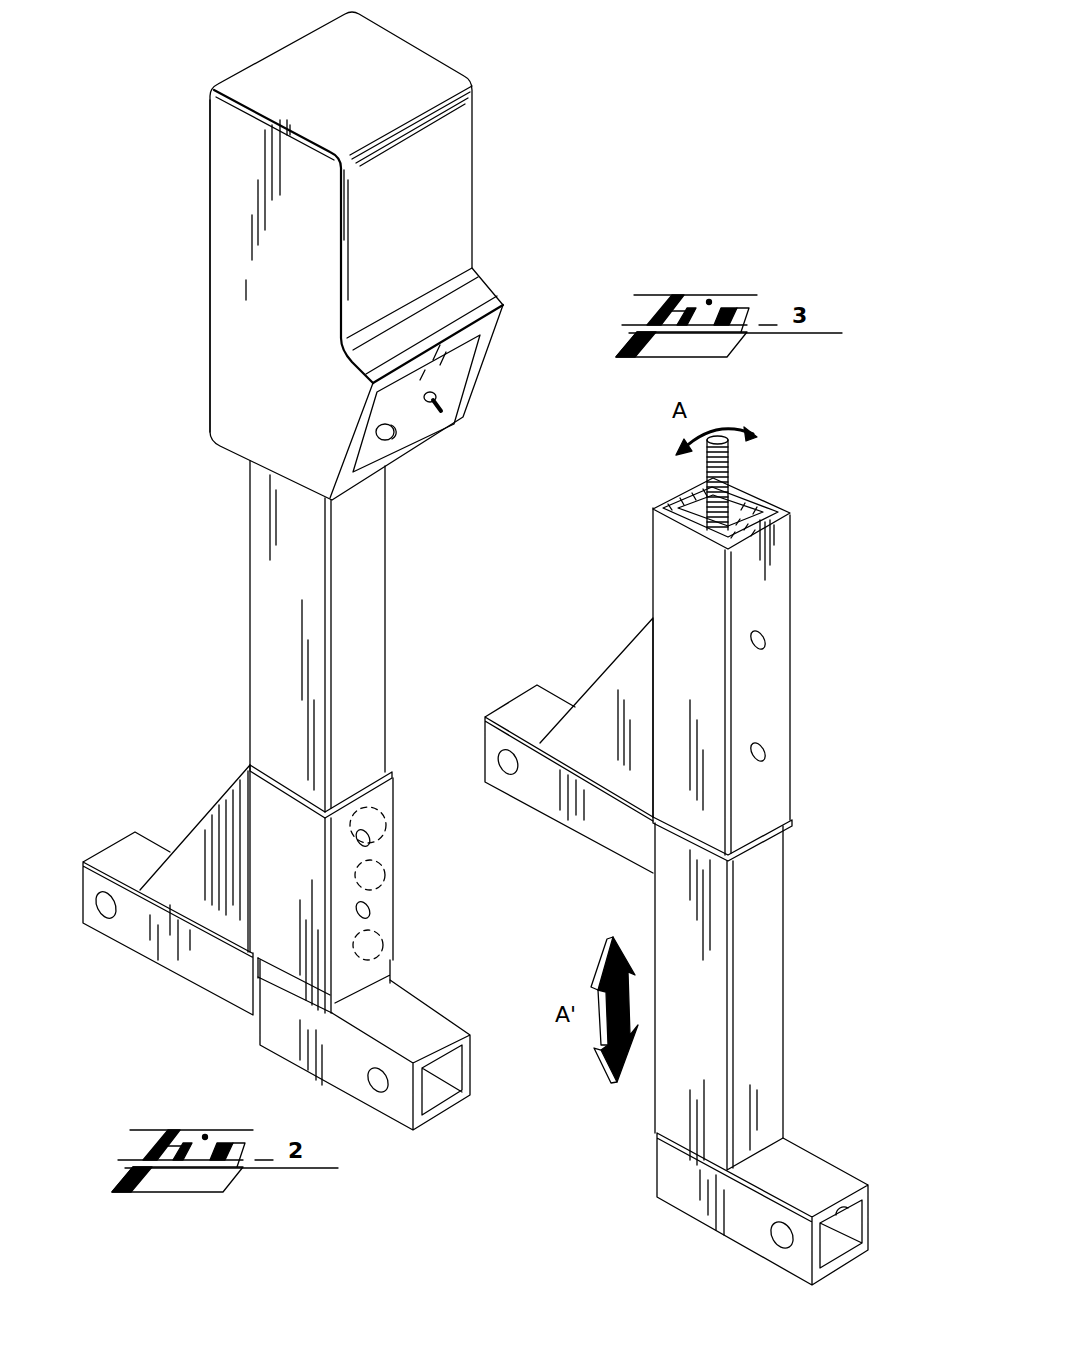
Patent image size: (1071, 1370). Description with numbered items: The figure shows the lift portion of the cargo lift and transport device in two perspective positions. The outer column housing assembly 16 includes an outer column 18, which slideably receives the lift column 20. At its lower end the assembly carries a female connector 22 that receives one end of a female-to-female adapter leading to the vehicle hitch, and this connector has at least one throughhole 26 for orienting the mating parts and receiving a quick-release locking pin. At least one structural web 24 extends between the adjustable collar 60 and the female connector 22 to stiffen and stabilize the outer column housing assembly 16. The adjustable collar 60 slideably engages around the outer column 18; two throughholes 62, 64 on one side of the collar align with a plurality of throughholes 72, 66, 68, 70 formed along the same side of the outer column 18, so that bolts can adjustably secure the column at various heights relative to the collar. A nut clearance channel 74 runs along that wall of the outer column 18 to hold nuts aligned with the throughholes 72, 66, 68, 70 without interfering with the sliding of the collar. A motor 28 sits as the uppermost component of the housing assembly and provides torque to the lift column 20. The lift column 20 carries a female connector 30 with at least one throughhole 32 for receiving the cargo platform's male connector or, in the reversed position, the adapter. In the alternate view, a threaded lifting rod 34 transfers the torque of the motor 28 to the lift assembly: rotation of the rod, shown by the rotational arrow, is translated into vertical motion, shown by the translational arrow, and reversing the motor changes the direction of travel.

In FIG. 2, the outer column housing assembly 16 is at (449, 45).
In FIG. 2, the outer column 18 is at (378, 563).
In FIG. 3, the outer column 18 is at (752, 500).
In FIG. 2, the lift column 20 is at (433, 1008).
In FIG. 3, the lift column 20 is at (770, 940).
In FIG. 2, the female connector 22 is at (135, 848).
In FIG. 3, the female connector 22 is at (520, 703).
In FIG. 2, the structural web 24 is at (200, 830).
In FIG. 3, the structural web 24 is at (600, 746).
In FIG. 2, the throughhole 26 is at (106, 920).
In FIG. 3, the throughhole 26 is at (508, 762).
In FIG. 2, the motor 28 is at (297, 398).
In FIG. 2, the female connector 30 is at (450, 1027).
In FIG. 3, the female connector 30 is at (815, 1165).
In FIG. 2, the throughhole 32 is at (380, 1095).
In FIG. 3, the throughhole 32 is at (773, 1228).
In FIG. 3, the threaded lifting rod 34 is at (730, 458).
In FIG. 2, the adjustable collar 60 is at (383, 795).
In FIG. 3, the adjustable collar 60 is at (782, 555).
In FIG. 2, the throughhole 62 is at (370, 838).
In FIG. 3, the throughhole 62 is at (765, 640).
In FIG. 2, the throughhole 64 is at (370, 910).
In FIG. 3, the throughhole 64 is at (766, 750).
In FIG. 2, the throughhole 66 is at (385, 870).
In FIG. 2, the throughhole 68 is at (383, 940).
In FIG. 2, the throughhole 70 is at (377, 987).
In FIG. 2, the throughhole 72 is at (386, 800).
In FIG. 2, the nut clearance channel 74 is at (357, 1018).